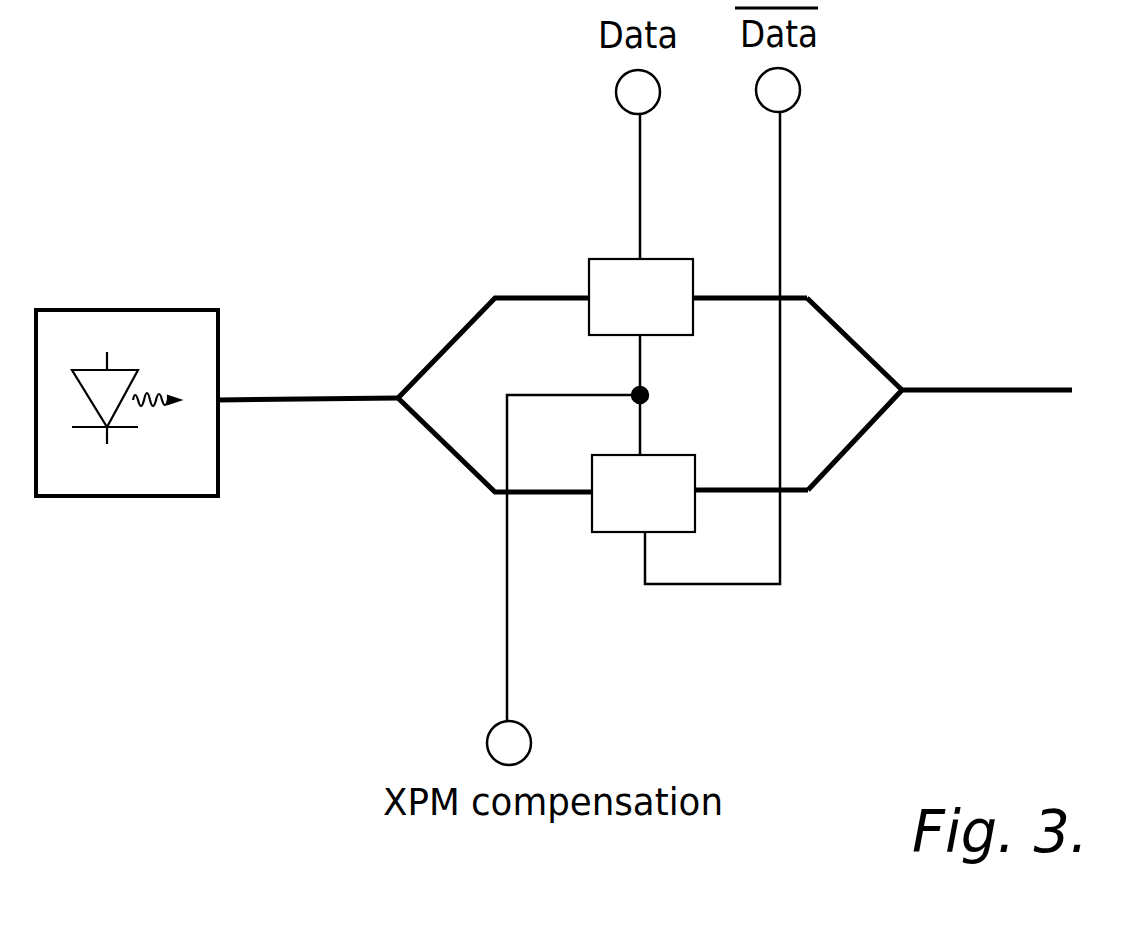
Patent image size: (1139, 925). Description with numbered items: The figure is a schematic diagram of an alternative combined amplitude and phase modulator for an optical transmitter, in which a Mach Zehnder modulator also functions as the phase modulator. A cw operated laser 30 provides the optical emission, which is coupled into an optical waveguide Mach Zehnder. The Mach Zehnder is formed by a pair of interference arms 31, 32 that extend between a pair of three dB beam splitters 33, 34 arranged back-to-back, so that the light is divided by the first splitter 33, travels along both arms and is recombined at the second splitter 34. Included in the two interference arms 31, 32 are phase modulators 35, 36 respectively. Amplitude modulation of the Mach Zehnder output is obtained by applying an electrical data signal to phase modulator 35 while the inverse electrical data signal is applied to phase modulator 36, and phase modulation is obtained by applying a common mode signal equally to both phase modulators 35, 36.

The cw operated laser 30 is at (112, 330).
The interference arm 31 is at (737, 293).
The interference arm 32 is at (737, 488).
The 3 dB beam splitter 33 is at (420, 395).
The 3 dB beam splitter 34 is at (887, 390).
The phase modulator 35 is at (602, 271).
The phase modulator 36 is at (613, 517).